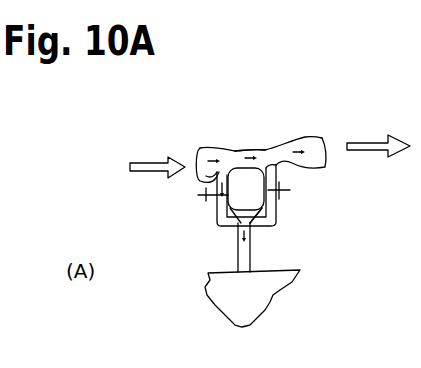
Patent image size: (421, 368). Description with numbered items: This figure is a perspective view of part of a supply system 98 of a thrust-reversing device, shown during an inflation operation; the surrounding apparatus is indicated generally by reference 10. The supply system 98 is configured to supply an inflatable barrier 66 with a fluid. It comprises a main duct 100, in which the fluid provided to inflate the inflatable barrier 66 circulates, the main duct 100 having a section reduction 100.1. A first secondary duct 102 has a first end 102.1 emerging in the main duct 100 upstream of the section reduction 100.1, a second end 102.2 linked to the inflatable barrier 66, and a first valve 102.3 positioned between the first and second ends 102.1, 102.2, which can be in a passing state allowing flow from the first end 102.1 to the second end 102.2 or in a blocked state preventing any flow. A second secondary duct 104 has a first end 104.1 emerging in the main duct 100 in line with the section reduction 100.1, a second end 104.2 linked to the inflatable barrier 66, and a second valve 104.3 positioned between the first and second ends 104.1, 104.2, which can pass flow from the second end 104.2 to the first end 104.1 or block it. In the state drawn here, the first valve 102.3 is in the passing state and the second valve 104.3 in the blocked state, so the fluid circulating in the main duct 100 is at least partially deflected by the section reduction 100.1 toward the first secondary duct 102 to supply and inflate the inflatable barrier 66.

The apparatus 10 is at (407, 341).
The inflatable barrier 66 is at (220, 297).
The supply system 98 is at (170, 141).
The main duct 100 is at (308, 138).
The section reduction 100.1 is at (260, 148).
The first secondary duct 102 is at (216, 212).
The first end 102.1 is at (206, 176).
The second end 102.2 is at (233, 226).
The first valve 102.3 is at (198, 196).
The second secondary duct 104 is at (277, 210).
The first end 104.1 is at (273, 167).
The second end 104.2 is at (250, 219).
The second valve 104.3 is at (292, 190).